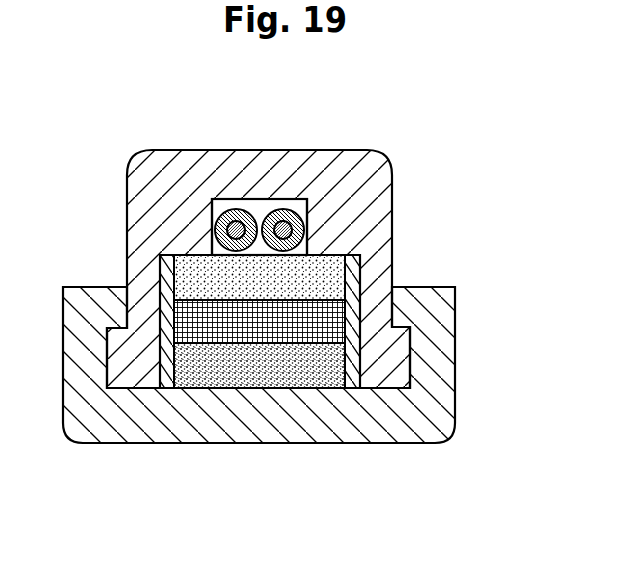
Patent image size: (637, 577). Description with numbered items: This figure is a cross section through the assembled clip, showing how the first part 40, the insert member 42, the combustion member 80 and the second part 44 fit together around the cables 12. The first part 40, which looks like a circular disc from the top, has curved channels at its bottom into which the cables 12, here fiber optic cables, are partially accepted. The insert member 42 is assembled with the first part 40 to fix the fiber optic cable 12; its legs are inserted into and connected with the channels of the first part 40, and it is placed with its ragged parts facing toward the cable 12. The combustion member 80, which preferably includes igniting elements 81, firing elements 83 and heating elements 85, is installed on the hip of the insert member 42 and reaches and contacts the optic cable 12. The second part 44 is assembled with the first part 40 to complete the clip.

The cable 12 is at (275, 210).
The first part 40 is at (392, 200).
The insert member 42 is at (370, 463).
The second part 44 is at (455, 345).
The combustion member 80 is at (256, 406).
The igniting elements 81 is at (332, 502).
The firing elements 83 is at (262, 330).
The heating elements 85 is at (313, 293).